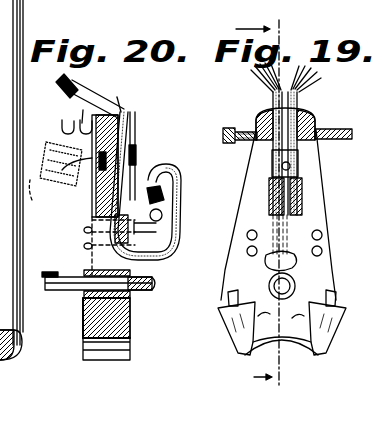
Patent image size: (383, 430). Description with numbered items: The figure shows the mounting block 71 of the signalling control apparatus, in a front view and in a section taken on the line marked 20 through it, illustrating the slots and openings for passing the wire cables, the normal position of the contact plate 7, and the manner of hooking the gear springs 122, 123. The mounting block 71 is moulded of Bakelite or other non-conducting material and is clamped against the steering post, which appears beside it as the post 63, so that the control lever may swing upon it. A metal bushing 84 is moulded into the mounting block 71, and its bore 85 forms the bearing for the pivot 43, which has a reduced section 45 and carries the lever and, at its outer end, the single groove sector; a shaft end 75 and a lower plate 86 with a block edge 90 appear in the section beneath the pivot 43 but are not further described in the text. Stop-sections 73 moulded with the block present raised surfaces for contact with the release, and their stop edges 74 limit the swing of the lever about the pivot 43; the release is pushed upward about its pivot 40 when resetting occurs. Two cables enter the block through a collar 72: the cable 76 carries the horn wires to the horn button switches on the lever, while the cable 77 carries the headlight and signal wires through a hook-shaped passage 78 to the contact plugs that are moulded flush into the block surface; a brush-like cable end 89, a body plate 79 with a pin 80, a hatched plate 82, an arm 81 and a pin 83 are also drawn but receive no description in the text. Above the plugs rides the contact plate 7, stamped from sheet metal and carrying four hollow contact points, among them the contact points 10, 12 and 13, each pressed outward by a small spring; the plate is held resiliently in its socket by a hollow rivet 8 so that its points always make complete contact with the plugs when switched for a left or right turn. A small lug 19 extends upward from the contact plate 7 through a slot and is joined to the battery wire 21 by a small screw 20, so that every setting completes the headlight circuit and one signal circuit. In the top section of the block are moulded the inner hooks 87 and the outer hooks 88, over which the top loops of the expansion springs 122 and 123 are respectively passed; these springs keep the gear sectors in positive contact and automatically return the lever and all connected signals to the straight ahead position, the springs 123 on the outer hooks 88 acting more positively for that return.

In FIG. 20, the pole 63 is at (0, 37).
In FIG. 20, the cable 76 is at (92, 90).
In FIG. 19, the cable 76 is at (271, 90).
In FIG. 20, the brush connection 89 is at (112, 96).
In FIG. 20, the hook tube 78 is at (130, 160).
In FIG. 19, the hook tube 78 is at (269, 190).
In FIG. 20, the plate 82 is at (92, 199).
In FIG. 20, the inner hook 87 is at (62, 125).
In FIG. 20, the outer hook 88 is at (83, 110).
In FIG. 20, the spring 122 is at (50, 149).
In FIG. 20, the arm 81 is at (64, 172).
In FIG. 20, the spring 123 is at (36, 201).
In FIG. 20, the pin 83 is at (84, 230).
In FIG. 20, the hollow rivet 8 is at (147, 231).
In FIG. 20, the contact plate 7 is at (162, 213).
In FIG. 20, the wire 21 is at (164, 175).
In FIG. 20, the lug 19 is at (156, 178).
In FIG. 20, the contact point 12 is at (144, 185).
In FIG. 20, the pivot 40 is at (124, 116).
In FIG. 19, the pivot 40 is at (356, 114).
In FIG. 20, the small screw 20 is at (176, 190).
In FIG. 19, the small screw 20 is at (269, 205).
In FIG. 20, the contact point 13 is at (181, 228).
In FIG. 20, the contact point 10 is at (135, 253).
In FIG. 20, the pivot 43 is at (67, 289).
In FIG. 20, the shaft end 75 is at (137, 293).
In FIG. 20, the reduced section 45 is at (156, 290).
In FIG. 19, the reduced section 45 is at (296, 280).
In FIG. 20, the mounting block 71 is at (127, 328).
In FIG. 19, the mounting block 71 is at (326, 186).
In FIG. 20, the block edge 90 is at (82, 300).
In FIG. 20, the base plate 86 is at (100, 350).
In FIG. 19, the base plate 86 is at (292, 342).
In FIG. 20, the metal bushing 84 is at (83, 340).
In FIG. 19, the metal bushing 84 is at (326, 298).
In FIG. 19, the stop-section 73 is at (238, 0).
In FIG. 19, the cable 77 is at (300, 96).
In FIG. 19, the collar 72 is at (312, 116).
In FIG. 19, the body plate 79 is at (298, 170).
In FIG. 19, the pin 80 is at (290, 163).
In FIG. 19, the bore 85 is at (270, 284).
In FIG. 19, the stop edge 74 is at (336, 298).